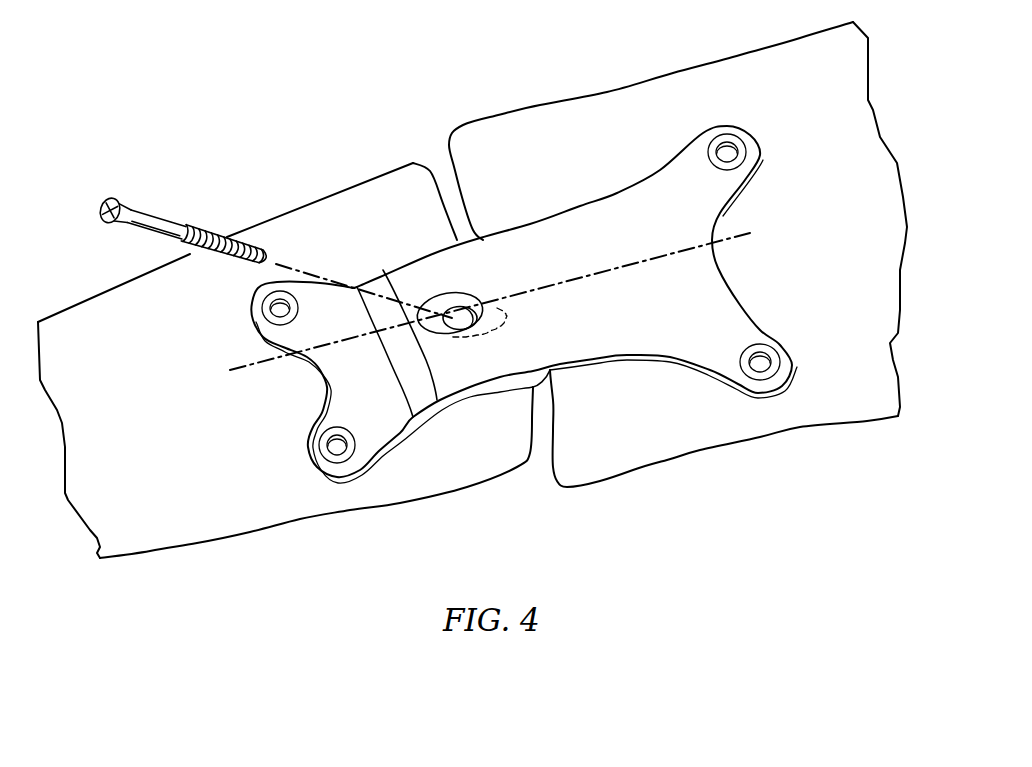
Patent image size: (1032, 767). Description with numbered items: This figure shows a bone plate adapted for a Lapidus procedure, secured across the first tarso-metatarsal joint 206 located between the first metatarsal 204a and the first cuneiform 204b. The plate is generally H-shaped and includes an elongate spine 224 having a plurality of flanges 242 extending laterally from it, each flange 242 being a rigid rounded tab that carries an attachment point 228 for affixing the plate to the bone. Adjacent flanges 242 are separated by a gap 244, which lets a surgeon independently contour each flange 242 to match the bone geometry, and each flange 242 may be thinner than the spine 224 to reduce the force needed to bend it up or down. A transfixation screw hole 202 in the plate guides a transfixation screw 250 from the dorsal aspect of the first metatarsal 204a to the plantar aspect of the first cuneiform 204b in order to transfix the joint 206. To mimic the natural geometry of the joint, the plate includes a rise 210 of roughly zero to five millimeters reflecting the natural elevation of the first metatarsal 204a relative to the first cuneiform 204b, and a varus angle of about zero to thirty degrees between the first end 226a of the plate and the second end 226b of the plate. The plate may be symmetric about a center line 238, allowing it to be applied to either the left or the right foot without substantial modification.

The transfixation screw hole 202 is at (447, 300).
The first metatarsal 204a is at (270, 523).
The first cuneiform 204b is at (827, 430).
The tarso-metatarsal (TMT) joint 206 is at (533, 498).
The rise 210 is at (553, 392).
The elongate spine 224 is at (580, 228).
The first end of the plate 226a is at (320, 393).
The second end of the plate 226b is at (733, 207).
The attachment point 228 is at (278, 307).
The center line 238 is at (637, 263).
The flange 242 is at (760, 151).
The gap 244 is at (775, 285).
The transfixation screw 250 is at (147, 214).